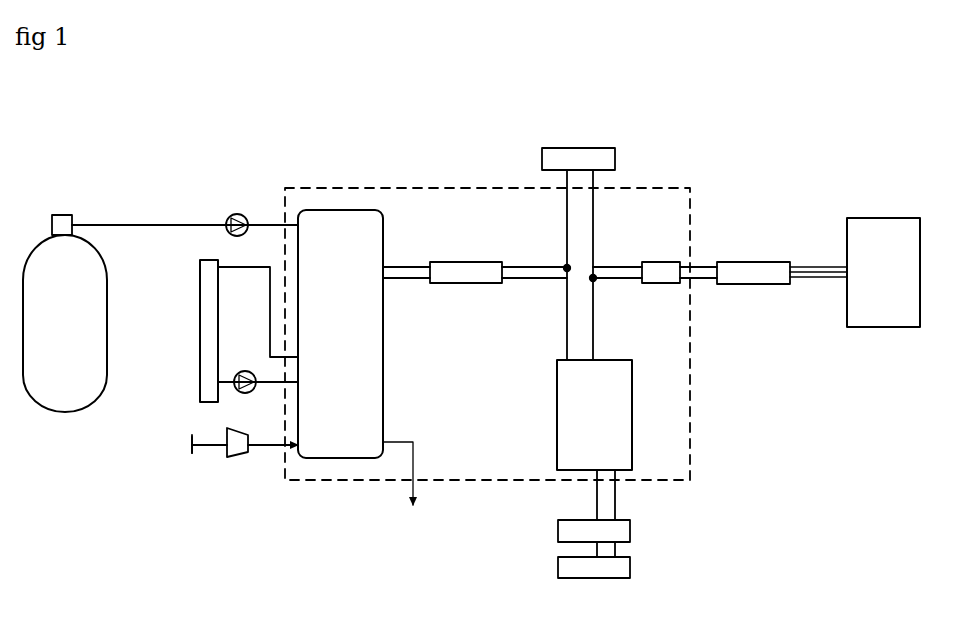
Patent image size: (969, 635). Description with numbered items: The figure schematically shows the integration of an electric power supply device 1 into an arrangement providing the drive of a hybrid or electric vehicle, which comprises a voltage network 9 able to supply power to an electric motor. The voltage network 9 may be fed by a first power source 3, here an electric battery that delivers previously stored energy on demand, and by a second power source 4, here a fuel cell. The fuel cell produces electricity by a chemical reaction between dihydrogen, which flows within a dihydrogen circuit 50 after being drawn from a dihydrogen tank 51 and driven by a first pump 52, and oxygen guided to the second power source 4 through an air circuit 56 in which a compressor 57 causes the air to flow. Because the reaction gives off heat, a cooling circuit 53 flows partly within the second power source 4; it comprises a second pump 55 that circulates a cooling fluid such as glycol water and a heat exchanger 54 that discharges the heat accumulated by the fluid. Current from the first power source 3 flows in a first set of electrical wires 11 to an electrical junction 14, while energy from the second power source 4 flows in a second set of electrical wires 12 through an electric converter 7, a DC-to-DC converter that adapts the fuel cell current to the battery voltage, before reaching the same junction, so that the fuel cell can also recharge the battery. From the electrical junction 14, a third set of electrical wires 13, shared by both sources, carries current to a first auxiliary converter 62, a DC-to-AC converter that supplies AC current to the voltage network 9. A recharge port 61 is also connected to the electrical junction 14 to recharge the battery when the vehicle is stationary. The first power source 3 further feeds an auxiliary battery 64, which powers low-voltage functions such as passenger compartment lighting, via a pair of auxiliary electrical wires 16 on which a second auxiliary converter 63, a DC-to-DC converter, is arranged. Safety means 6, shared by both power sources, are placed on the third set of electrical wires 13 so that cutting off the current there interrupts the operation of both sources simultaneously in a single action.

The electric power supply device 1 is at (702, 420).
The first power source 3 is at (594, 415).
The second power source 4 is at (355, 357).
The safety means 6 is at (660, 285).
The electric converter 7 is at (465, 283).
The voltage network 9 is at (882, 218).
The first set of electrical wires 11 is at (563, 322).
The second set of electrical wires 12 is at (415, 262).
The third set of electrical wires 13 is at (615, 263).
The electrical junction 14 is at (567, 268).
The pair of auxiliary electrical wires 16 is at (597, 508).
The dihydrogen circuit 50 is at (165, 203).
The dihydrogen tank 51 is at (63, 412).
The first pump 52 is at (237, 214).
The cooling circuit 53 is at (195, 290).
The heat exchanger 54 is at (200, 330).
The second pump 55 is at (245, 371).
The air circuit 56 is at (200, 463).
The compressor 57 is at (235, 457).
The recharge port 61 is at (577, 148).
The first auxiliary converter 62 is at (753, 262).
The second auxiliary converter 63 is at (632, 530).
The auxiliary battery 64 is at (632, 567).